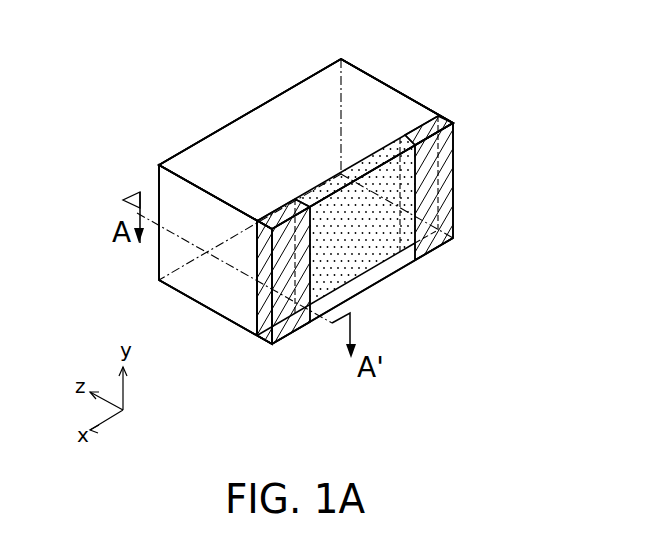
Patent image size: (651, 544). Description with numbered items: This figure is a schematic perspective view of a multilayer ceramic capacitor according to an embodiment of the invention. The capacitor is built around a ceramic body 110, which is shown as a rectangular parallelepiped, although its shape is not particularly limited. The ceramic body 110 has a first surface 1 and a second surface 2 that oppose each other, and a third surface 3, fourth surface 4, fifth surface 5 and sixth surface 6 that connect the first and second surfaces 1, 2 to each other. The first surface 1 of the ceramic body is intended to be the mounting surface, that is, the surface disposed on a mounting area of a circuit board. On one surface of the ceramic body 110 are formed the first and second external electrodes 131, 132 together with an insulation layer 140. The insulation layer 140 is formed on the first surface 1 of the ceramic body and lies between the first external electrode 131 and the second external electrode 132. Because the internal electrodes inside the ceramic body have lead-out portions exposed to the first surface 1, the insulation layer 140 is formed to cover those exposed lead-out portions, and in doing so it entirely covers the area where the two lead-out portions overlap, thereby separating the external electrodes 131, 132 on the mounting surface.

The ceramic body 110 is at (167, 180).
The first surface 1 is at (378, 259).
The second surface 2 is at (206, 165).
The third surface 3 is at (192, 284).
The fourth surface 4 is at (376, 101).
The fifth surface 5 is at (279, 119).
The sixth surface 6 is at (237, 303).
The first external electrode 131 is at (278, 336).
The second external electrode 132 is at (456, 213).
The insulation layer 140 is at (412, 262).